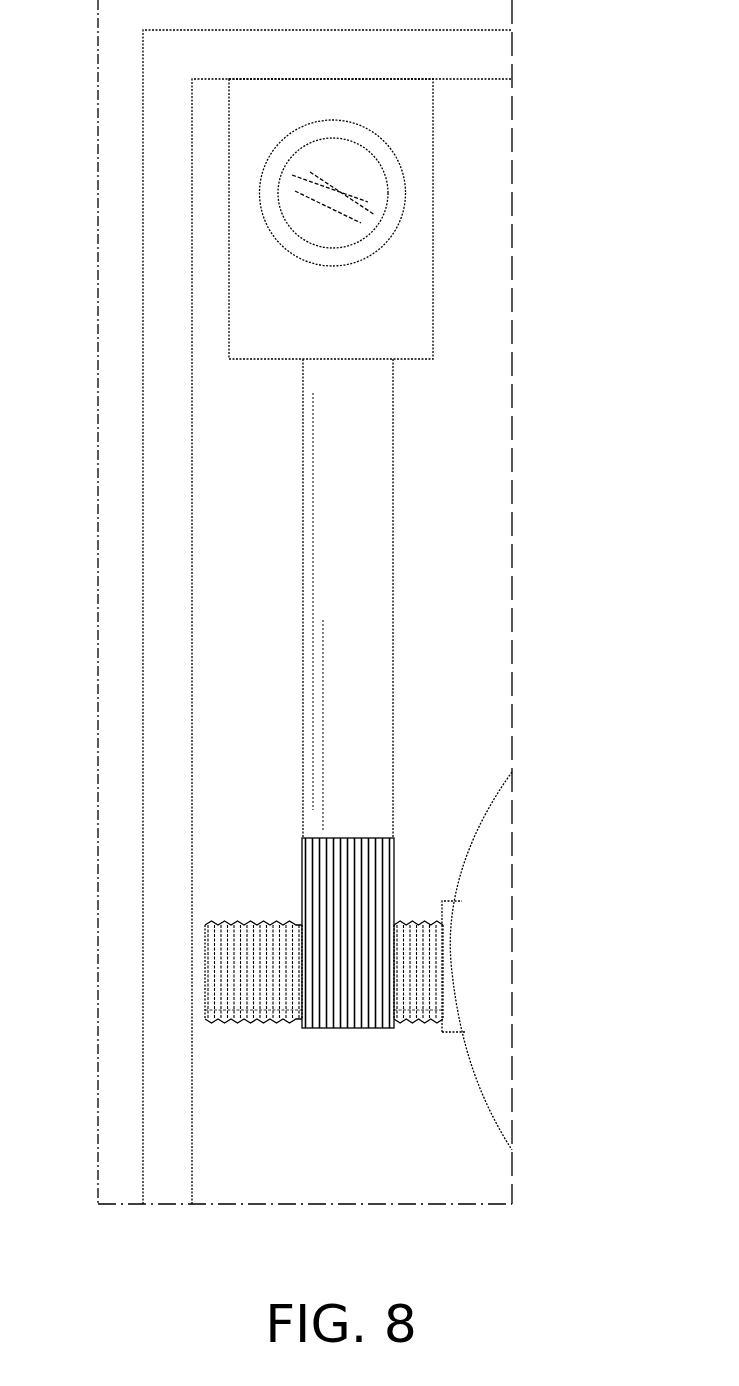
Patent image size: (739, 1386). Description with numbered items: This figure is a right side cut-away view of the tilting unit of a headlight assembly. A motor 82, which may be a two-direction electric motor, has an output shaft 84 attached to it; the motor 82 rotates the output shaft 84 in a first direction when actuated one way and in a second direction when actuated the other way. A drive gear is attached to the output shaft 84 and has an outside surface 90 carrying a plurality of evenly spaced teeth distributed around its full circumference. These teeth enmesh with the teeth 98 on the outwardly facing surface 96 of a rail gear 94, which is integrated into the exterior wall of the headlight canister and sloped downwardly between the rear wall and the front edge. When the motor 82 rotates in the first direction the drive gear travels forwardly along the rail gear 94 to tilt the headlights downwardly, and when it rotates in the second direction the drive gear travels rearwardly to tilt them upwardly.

The motor 82 is at (433, 302).
The output shaft 84 is at (375, 568).
The outside surface 90 is at (380, 882).
The rail gear 94 is at (205, 943).
The outwardly facing surface 96 is at (205, 1012).
The teeth 98 is at (258, 1020).